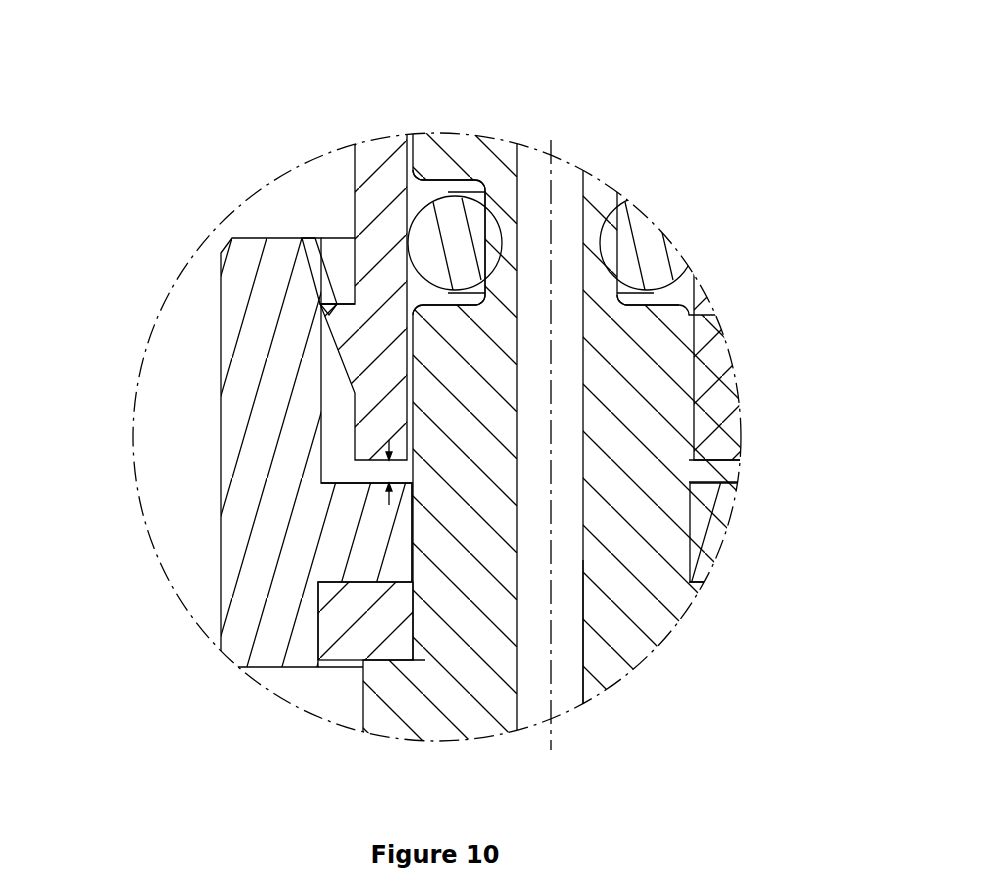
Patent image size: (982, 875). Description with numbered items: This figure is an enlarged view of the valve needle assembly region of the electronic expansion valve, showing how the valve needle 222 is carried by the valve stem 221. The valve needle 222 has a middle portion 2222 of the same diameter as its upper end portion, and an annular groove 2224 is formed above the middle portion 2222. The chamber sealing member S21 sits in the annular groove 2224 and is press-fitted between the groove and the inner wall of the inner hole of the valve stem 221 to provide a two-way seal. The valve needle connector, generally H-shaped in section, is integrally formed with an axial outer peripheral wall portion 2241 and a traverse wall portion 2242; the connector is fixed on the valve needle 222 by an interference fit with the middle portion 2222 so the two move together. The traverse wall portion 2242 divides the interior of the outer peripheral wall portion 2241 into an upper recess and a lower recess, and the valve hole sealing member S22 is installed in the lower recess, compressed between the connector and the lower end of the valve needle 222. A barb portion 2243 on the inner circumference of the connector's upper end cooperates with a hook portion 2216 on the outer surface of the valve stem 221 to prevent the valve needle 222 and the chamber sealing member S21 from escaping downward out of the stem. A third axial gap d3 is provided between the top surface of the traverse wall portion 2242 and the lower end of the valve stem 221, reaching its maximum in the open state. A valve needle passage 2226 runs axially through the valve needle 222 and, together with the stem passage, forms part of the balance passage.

The valve stem 221 is at (413, 135).
The annular groove 2224 is at (463, 232).
The valve needle passage 2226 is at (573, 647).
The chamber sealing member S21 is at (460, 229).
The barb portion 2243 is at (312, 272).
The outer peripheral wall portion 2241 is at (268, 376).
The traverse wall portion 2242 is at (385, 517).
The hook portion 2216 is at (326, 311).
The valve hole sealing member S22 is at (375, 617).
The valve needle 222 is at (765, 351).
The middle portion 2222 is at (673, 417).
The third axial gap d3 is at (377, 472).